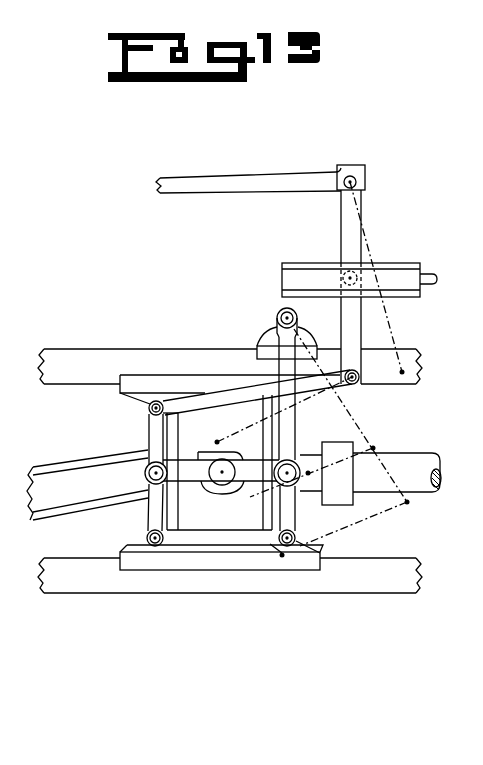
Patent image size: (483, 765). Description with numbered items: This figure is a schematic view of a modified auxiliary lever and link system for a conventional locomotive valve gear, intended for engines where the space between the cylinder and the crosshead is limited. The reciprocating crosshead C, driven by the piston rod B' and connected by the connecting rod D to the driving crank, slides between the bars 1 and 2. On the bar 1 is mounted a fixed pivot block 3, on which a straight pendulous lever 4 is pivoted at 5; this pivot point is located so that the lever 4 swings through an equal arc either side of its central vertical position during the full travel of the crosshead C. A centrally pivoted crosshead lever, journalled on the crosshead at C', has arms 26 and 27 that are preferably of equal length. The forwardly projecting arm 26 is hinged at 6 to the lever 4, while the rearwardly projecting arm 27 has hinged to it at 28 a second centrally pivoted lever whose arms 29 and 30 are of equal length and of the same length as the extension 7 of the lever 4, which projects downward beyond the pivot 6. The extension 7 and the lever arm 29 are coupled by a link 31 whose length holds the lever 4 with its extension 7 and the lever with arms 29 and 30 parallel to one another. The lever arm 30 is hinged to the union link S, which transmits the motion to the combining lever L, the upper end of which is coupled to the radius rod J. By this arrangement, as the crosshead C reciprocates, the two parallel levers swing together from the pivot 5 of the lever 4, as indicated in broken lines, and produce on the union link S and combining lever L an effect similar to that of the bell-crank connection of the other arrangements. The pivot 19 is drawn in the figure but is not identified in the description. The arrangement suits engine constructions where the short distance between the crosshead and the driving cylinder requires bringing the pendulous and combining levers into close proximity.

The guide bar 1 is at (76, 358).
The guide bar 2 is at (356, 586).
The fixed pivot block 3 is at (266, 337).
The pendulous lever 4 is at (297, 426).
The pivot 5 is at (277, 312).
The hinge point 6 is at (300, 462).
The extension of pendulous lever 7 is at (297, 517).
The pivot 19 is at (364, 381).
The forwardly projecting arm 26 is at (257, 467).
The rearwardly projecting arm 27 is at (190, 478).
The hinge 28 is at (146, 476).
The lever arm 29 is at (146, 518).
The lever arm 30 is at (150, 432).
The link 31 is at (353, 523).
The radius rod J is at (236, 180).
The combining lever L is at (338, 226).
The connecting rod D is at (46, 480).
The union link S is at (233, 398).
The crosshead C is at (221, 584).
The journal on crosshead C' is at (221, 486).
The piston rod B' is at (408, 489).